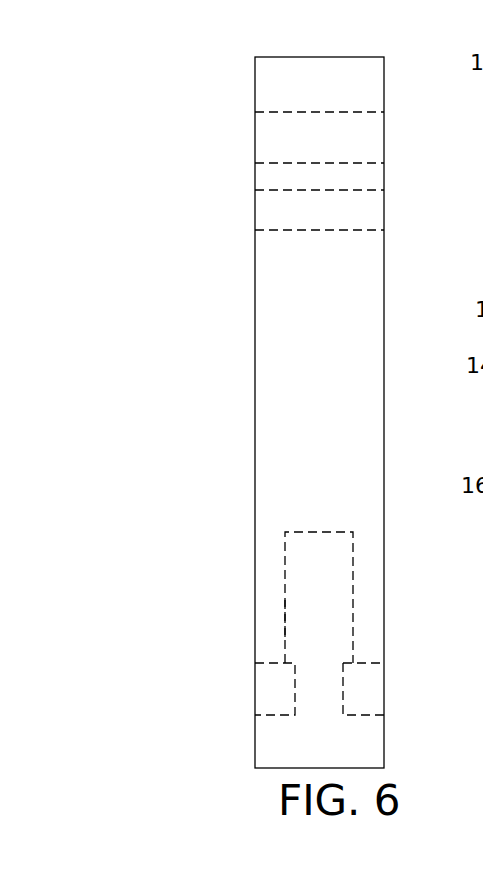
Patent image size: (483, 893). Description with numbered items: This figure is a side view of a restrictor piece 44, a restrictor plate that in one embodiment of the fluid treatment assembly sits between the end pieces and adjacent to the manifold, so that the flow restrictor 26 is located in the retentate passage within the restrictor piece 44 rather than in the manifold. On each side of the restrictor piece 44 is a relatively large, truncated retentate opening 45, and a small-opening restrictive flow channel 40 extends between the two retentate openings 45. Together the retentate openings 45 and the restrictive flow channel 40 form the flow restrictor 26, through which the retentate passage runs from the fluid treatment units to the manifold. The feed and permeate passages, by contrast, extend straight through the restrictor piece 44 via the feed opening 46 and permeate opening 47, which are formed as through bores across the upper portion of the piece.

The restrictor piece 44 is at (287, 327).
The feed opening 46 is at (283, 132).
The permeate opening 47 is at (275, 203).
The restrictive flow channel 40 is at (285, 559).
The flow restrictor 26 is at (285, 610).
The retentate opening 45 is at (273, 688).